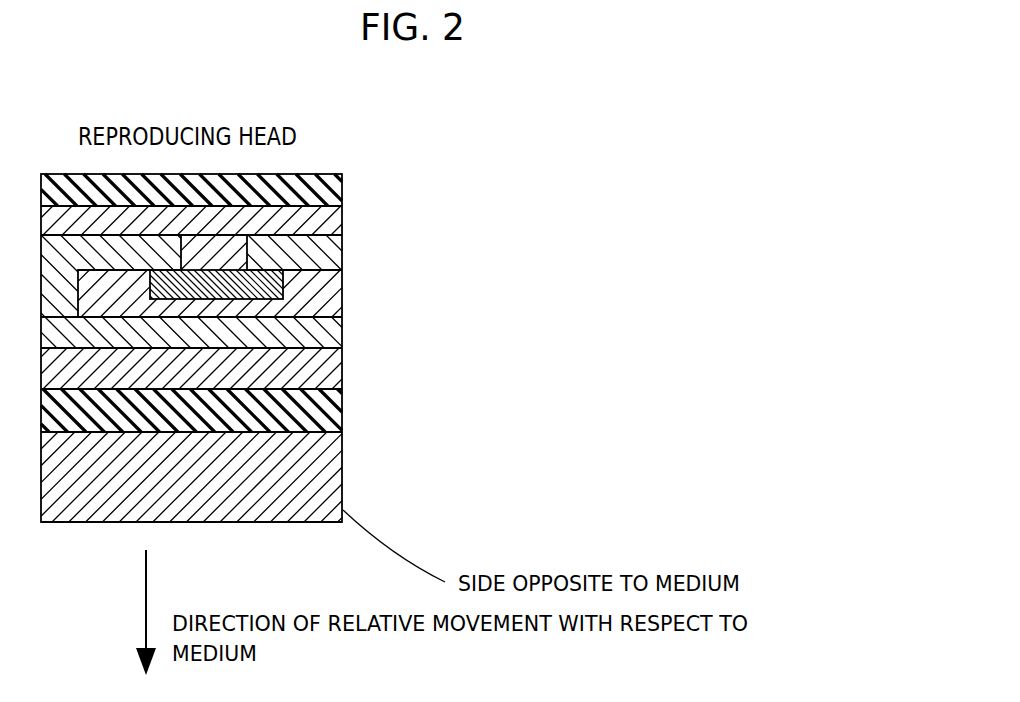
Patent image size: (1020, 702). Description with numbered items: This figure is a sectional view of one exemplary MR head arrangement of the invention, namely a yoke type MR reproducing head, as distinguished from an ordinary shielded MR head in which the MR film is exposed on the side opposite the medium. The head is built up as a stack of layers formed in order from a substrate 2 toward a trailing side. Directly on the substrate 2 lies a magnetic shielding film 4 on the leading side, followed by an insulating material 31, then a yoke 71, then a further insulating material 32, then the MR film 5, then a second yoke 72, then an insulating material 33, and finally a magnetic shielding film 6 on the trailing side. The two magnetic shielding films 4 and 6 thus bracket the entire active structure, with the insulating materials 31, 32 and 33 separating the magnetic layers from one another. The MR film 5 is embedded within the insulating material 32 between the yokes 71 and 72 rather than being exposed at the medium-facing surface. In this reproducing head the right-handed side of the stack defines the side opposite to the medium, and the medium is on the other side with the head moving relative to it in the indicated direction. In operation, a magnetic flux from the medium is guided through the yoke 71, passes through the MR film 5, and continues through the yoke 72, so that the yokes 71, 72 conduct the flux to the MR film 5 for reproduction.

The magnetic shielding film 6 is at (336, 185).
The insulating material 33 is at (331, 217).
The yoke 72 is at (340, 250).
The MR film 5 is at (283, 292).
The insulating material 32 is at (335, 301).
The yoke 71 is at (333, 329).
The insulating material 31 is at (335, 378).
The magnetic shielding film 4 is at (336, 420).
The substrate 2 is at (333, 481).